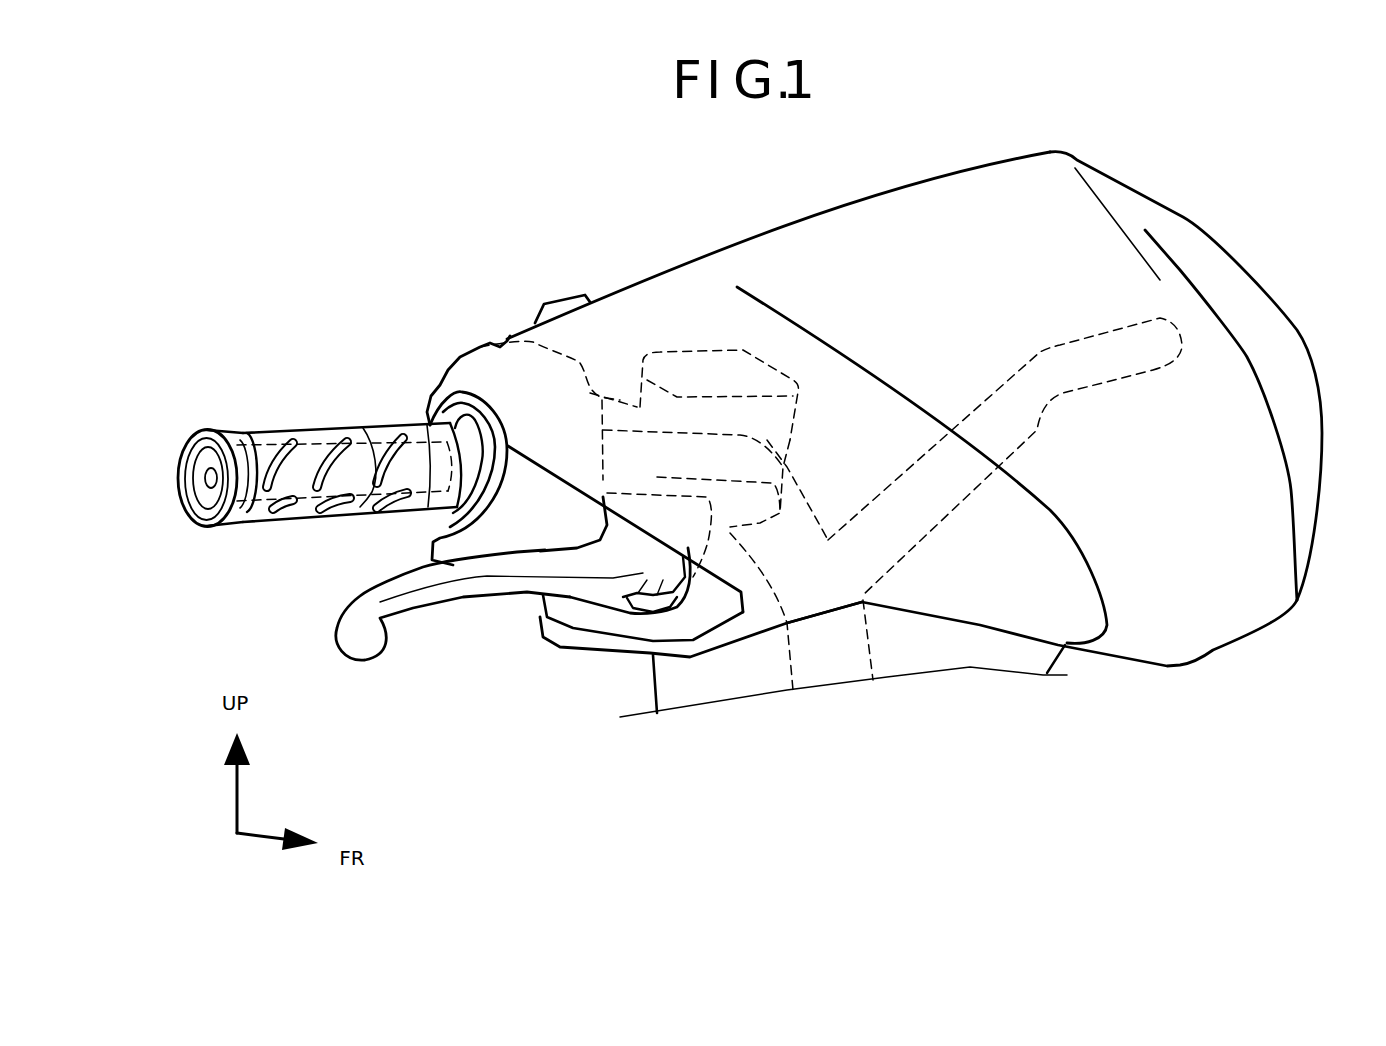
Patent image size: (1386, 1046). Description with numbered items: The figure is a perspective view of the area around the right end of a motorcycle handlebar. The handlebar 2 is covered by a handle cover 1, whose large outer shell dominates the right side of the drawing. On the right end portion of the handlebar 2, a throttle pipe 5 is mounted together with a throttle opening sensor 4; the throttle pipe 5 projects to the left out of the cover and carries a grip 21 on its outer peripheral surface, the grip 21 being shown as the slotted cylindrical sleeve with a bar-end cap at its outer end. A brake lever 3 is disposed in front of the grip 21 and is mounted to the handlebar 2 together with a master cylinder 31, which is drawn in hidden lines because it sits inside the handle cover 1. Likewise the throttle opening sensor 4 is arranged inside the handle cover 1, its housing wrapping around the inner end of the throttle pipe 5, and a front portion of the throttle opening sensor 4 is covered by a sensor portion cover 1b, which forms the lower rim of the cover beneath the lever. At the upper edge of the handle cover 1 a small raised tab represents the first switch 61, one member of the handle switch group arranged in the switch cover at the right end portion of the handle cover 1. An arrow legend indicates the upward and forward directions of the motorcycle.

The handle cover 1 is at (629, 305).
The sensor portion cover 1b is at (535, 493).
The handlebar 2 is at (817, 513).
The brake lever 3 is at (463, 585).
The throttle opening sensor 4 is at (495, 373).
The throttle pipe 5 is at (313, 450).
The grip 21 is at (262, 430).
The master cylinder 31 is at (690, 352).
The first switch 61 is at (560, 298).